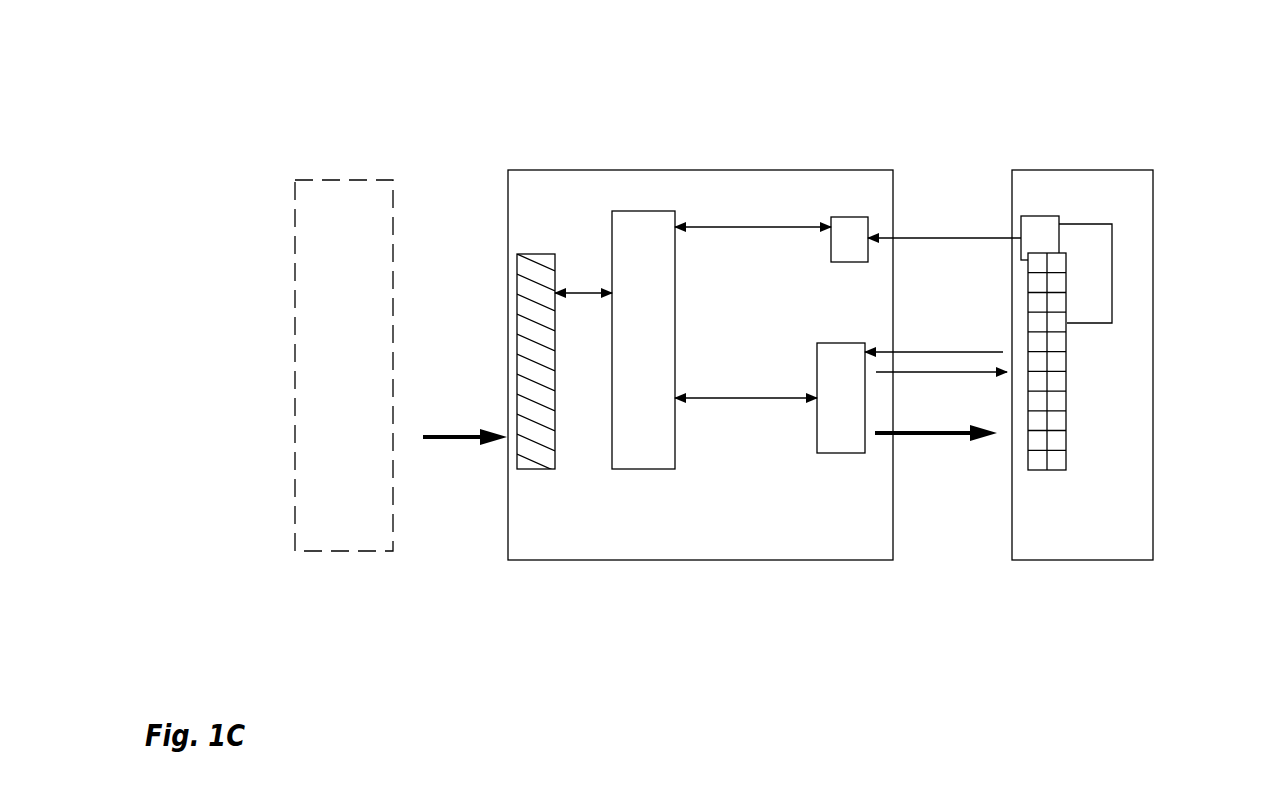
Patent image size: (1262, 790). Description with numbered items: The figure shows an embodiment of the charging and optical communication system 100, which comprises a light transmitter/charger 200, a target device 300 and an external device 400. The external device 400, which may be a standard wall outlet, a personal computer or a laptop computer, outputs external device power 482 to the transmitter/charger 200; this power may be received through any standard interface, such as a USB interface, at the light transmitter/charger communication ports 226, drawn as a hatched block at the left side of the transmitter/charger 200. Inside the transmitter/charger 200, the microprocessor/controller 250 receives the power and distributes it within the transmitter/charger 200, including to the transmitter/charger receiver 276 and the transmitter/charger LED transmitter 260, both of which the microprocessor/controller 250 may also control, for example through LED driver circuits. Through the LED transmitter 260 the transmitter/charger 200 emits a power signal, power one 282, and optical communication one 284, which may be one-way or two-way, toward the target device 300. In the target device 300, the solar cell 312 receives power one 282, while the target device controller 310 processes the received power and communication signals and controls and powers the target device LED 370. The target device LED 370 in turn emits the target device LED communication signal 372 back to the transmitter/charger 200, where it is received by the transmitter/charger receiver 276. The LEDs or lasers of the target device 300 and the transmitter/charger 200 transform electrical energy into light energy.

The system 100 is at (472, 85).
The light transmitter/charger 200 is at (700, 170).
The light transmitter/charger communication ports 226 is at (535, 469).
The microprocessor/controller 250 is at (642, 211).
The transmitter/charger receiver 276 is at (845, 217).
The transmitter/charger LED transmitter 260 is at (840, 453).
The power one 282 is at (924, 437).
The optical communication one 284 is at (985, 352).
The target device LED communication signal 372 is at (992, 238).
The target device 300 is at (1035, 170).
The target device LED 370 is at (1040, 216).
The target device controller 310 is at (1112, 272).
The solar cell 312 is at (1046, 470).
The external device 400 is at (343, 551).
The external device power 482 is at (457, 437).